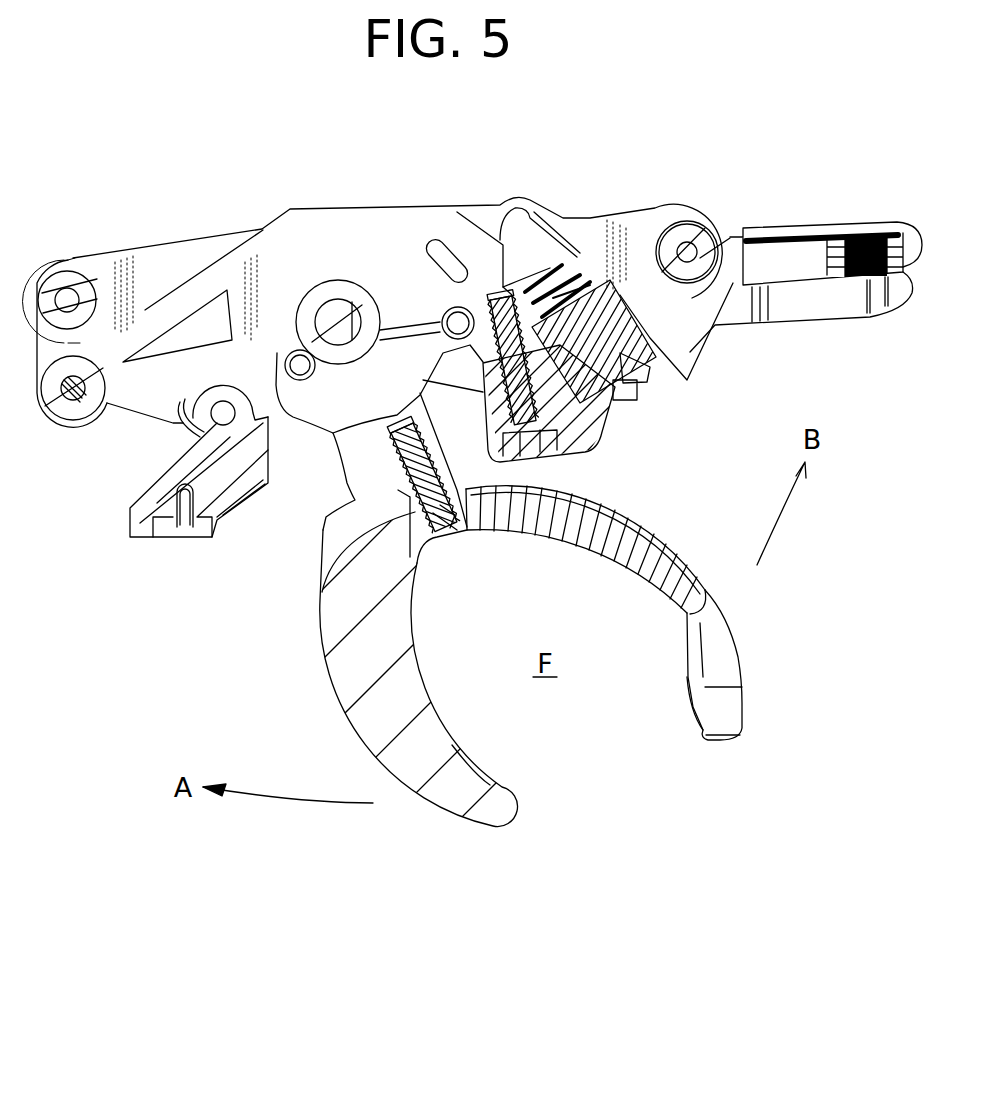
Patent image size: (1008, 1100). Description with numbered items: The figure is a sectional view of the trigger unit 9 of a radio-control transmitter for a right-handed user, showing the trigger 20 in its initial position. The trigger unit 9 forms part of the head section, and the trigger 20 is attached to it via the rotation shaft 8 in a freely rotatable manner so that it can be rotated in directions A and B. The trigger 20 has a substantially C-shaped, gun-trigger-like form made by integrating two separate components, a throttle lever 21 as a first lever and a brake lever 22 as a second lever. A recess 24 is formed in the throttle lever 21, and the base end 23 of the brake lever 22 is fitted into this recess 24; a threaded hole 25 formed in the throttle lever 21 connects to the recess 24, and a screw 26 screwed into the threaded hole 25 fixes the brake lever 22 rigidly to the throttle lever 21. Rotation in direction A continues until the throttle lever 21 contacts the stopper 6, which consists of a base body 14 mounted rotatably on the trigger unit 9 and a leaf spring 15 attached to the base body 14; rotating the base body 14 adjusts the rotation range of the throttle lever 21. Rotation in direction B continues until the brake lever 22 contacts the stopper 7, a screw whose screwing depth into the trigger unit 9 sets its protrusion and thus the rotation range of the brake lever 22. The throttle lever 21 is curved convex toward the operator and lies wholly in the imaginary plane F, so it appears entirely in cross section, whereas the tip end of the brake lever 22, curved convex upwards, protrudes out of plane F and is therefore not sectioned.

The stopper 6 is at (43, 455).
The stopper 7 is at (562, 446).
The rotation shaft 8 is at (342, 310).
The trigger unit 9 is at (325, 207).
The base body 14 is at (210, 463).
The leaf spring 15 is at (202, 468).
The trigger 20 is at (578, 908).
The throttle lever 21 is at (502, 810).
The brake lever 22 is at (722, 720).
The base end 23 is at (418, 553).
The recess 24 is at (320, 652).
The threaded hole 25 is at (407, 431).
The screw 26 is at (450, 490).